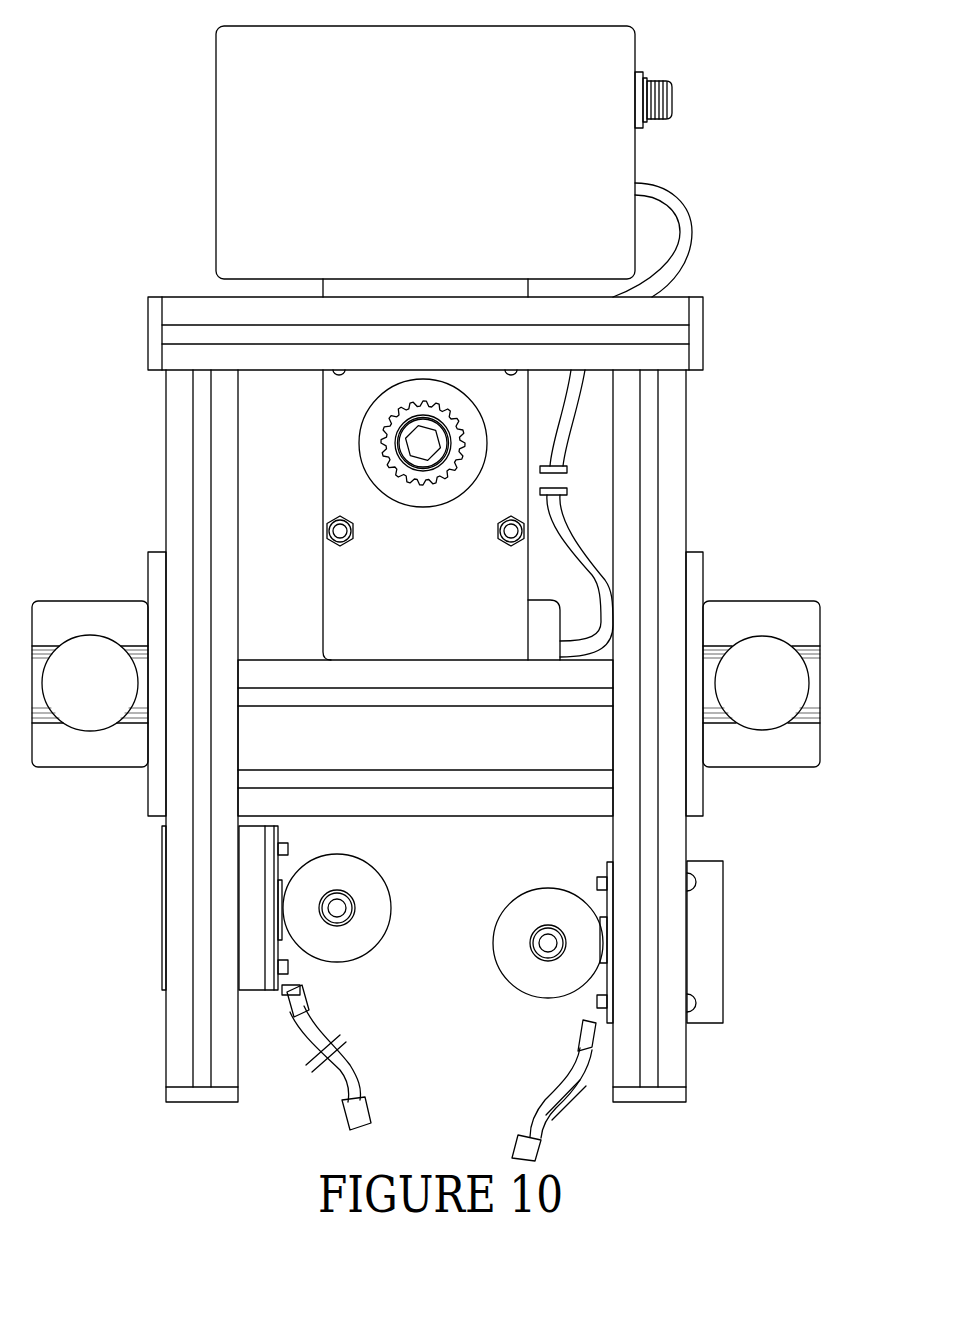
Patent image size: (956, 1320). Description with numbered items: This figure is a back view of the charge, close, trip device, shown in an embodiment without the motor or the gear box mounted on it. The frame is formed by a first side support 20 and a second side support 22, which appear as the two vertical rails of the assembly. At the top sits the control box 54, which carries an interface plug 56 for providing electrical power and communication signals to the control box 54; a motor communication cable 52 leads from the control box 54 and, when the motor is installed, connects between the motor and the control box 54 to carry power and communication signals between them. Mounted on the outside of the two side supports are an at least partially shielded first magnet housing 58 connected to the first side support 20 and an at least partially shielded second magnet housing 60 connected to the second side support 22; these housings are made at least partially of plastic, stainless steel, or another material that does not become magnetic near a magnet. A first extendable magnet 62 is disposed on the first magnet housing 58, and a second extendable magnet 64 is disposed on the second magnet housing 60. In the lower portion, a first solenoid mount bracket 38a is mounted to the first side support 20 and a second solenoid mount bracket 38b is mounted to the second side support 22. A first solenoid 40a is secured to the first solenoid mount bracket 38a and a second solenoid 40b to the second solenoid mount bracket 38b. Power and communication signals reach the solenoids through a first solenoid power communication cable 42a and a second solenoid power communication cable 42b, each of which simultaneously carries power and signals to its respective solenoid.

The control box 54 is at (216, 152).
The interface plug 56 is at (673, 99).
The motor communication cable 52 is at (692, 232).
The second side support 22 is at (165, 1055).
The first side support 20 is at (687, 1055).
The at least partially shielded first magnet housing 58 is at (94, 751).
The first extendable magnet 62 is at (93, 657).
The at least partially shielded second magnet housing 60 is at (757, 750).
The second extendable magnet 64 is at (758, 657).
The second solenoid mount bracket 38b is at (253, 981).
The first solenoid mount bracket 38a is at (710, 938).
The second solenoid 40b is at (373, 863).
The first solenoid 40a is at (512, 984).
The second solenoid power communication cable 42b is at (313, 1028).
The first solenoid power communication cable 42a is at (572, 1058).